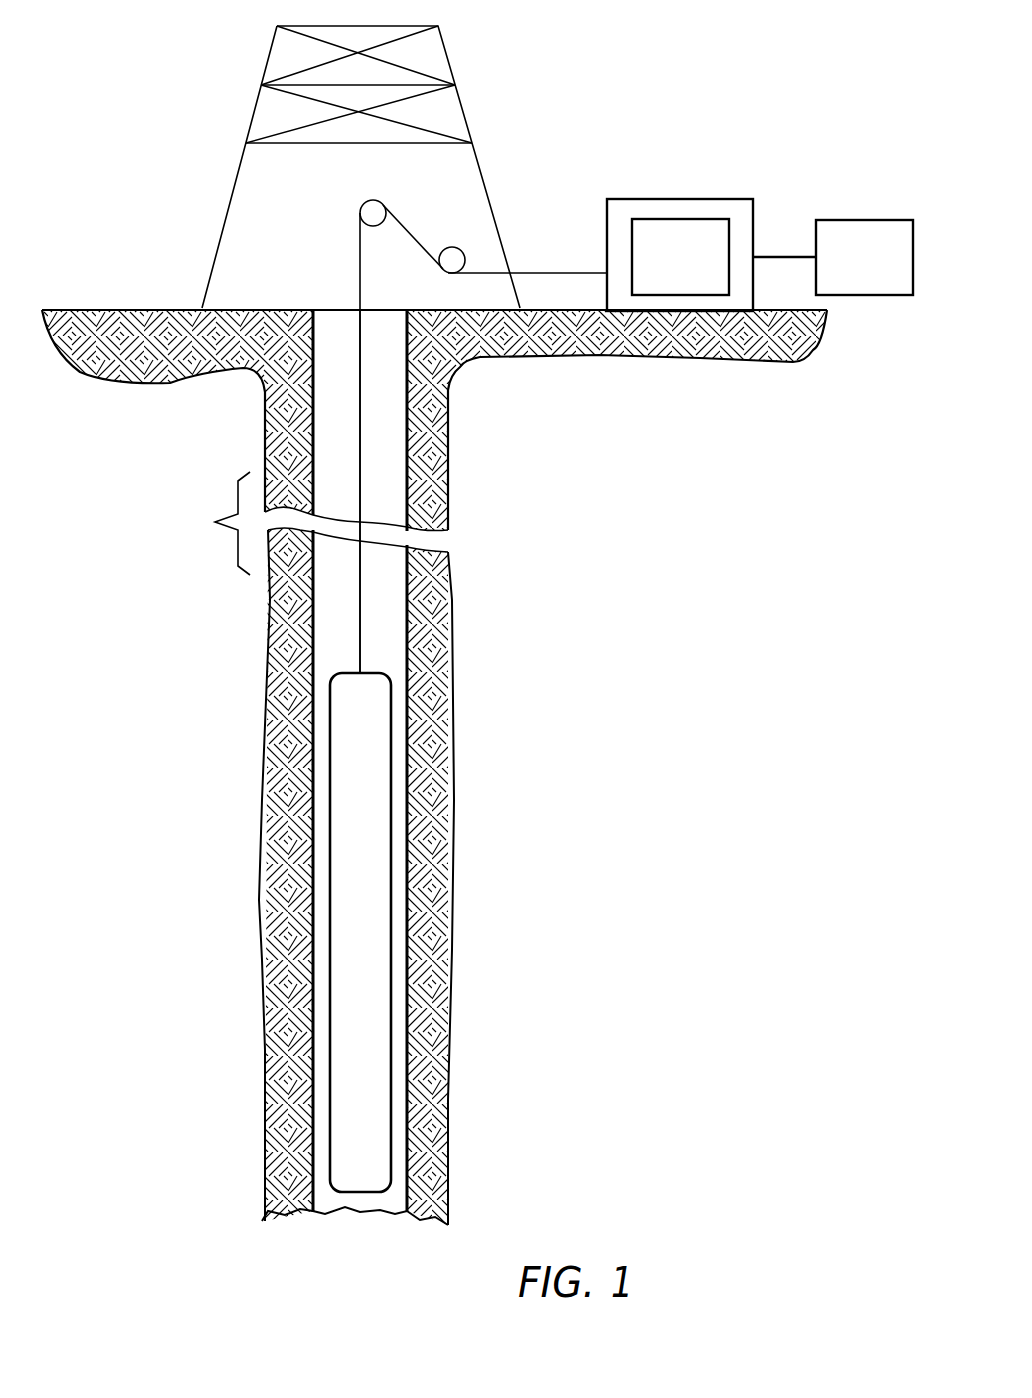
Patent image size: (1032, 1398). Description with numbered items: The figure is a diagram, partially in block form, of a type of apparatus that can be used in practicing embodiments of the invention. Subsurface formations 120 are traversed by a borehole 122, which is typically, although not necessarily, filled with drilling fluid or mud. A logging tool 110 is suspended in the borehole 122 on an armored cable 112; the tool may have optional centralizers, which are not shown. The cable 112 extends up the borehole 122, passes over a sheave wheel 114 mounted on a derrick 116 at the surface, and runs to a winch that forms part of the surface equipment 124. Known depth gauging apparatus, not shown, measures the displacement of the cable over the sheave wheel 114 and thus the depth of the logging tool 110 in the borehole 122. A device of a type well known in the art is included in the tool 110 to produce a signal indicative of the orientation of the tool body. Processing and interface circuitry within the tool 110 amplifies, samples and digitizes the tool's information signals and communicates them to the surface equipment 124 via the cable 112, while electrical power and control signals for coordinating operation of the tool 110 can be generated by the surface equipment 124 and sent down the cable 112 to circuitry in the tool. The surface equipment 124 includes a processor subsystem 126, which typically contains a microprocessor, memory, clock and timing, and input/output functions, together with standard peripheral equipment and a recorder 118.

The logging tool 110 is at (363, 1117).
The armored cable 112 is at (362, 465).
The sheave wheel 114 is at (366, 209).
The derrick 116 is at (447, 52).
The recorder 118 is at (875, 218).
The subsurface formations 120 is at (287, 1065).
The borehole 122 is at (328, 648).
The surface equipment 124 is at (603, 227).
The processor subsystem 126 is at (677, 233).